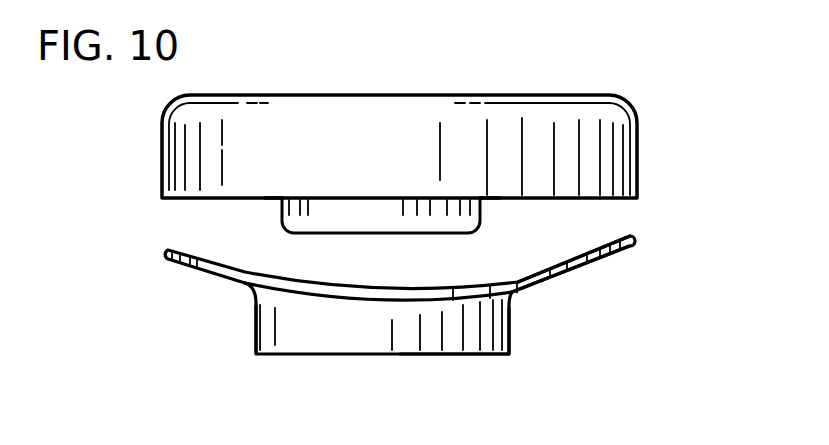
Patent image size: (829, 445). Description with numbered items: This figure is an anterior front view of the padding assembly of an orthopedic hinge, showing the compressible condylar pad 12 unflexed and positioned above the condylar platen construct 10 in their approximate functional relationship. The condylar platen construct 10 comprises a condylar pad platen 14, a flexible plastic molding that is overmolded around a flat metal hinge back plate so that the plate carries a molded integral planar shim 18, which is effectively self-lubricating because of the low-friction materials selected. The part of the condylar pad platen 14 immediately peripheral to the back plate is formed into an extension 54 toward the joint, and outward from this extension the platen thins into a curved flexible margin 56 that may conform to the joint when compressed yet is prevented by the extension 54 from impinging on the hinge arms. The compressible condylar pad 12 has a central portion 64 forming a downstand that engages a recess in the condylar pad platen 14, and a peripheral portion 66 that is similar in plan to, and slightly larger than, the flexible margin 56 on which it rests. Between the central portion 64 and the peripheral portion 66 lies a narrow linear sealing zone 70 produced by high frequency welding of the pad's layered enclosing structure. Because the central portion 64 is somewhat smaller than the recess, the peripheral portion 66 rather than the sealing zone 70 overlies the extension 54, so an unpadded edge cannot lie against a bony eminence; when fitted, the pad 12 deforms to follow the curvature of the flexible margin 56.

The condylar platen construct 10 is at (323, 335).
The compressible condylar pad 12 is at (172, 152).
The condylar pad platen 14 is at (262, 319).
The planar shim 18 is at (484, 355).
The extension 54 is at (253, 340).
The flexible margin 56 is at (563, 270).
The central portion 64 is at (366, 218).
The peripheral portion 66 is at (218, 172).
The sealing zone 70 is at (273, 198).